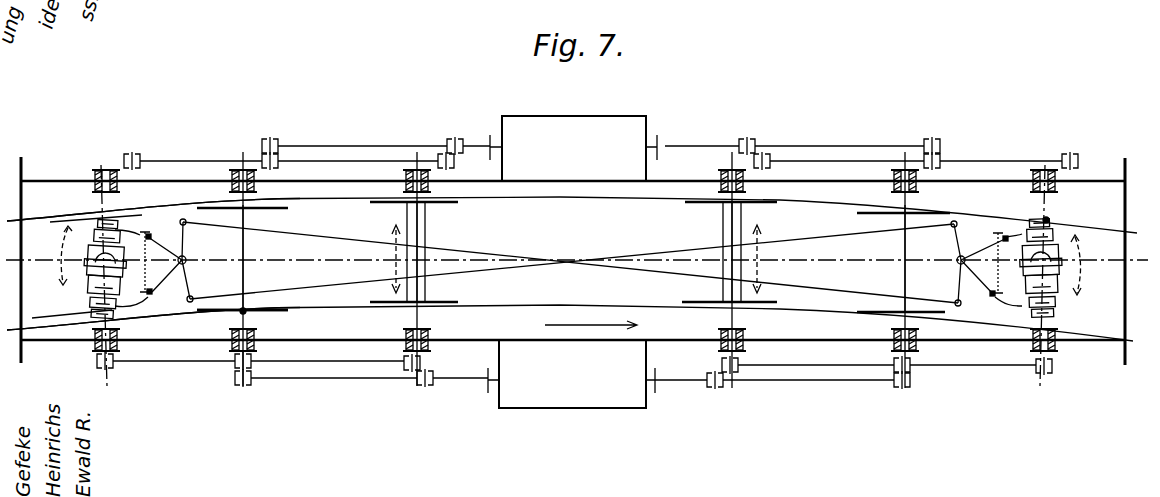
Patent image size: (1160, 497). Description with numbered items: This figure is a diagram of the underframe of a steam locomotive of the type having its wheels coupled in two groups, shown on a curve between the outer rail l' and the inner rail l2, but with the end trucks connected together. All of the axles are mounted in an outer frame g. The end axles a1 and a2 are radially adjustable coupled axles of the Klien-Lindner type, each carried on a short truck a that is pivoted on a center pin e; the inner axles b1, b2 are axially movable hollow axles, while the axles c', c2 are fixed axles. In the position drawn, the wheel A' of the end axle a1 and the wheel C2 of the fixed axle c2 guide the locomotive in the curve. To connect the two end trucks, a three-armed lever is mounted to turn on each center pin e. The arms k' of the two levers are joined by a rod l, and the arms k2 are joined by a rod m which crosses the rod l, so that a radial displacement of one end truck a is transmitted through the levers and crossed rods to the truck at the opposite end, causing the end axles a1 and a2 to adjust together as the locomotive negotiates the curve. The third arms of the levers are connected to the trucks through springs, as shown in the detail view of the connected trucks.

The outer frame g is at (55, 180).
The wheel A' is at (572, 266).
The truck a is at (175, 246).
The end axle a1 is at (1062, 292).
The end axle a2 is at (107, 278).
The inner axle b1 is at (728, 233).
The inner axle b2 is at (413, 228).
The fixed axle c' is at (917, 259).
The fixed axle c2 is at (248, 273).
The wheel C2 is at (218, 312).
The center pin e is at (186, 262).
The lever arm k' is at (575, 267).
The lever arm k2 is at (192, 240).
The rod l is at (572, 261).
The outer rail l' is at (173, 212).
The inner rail l2 is at (338, 310).
The rod m is at (478, 253).